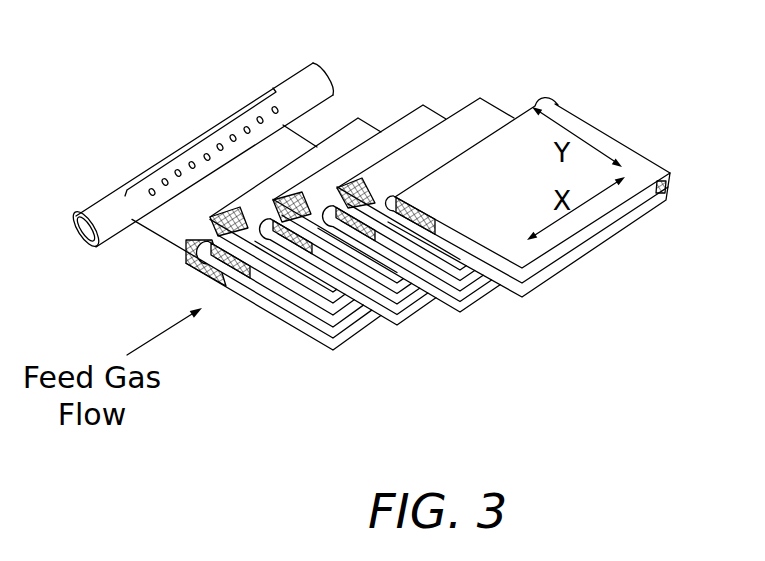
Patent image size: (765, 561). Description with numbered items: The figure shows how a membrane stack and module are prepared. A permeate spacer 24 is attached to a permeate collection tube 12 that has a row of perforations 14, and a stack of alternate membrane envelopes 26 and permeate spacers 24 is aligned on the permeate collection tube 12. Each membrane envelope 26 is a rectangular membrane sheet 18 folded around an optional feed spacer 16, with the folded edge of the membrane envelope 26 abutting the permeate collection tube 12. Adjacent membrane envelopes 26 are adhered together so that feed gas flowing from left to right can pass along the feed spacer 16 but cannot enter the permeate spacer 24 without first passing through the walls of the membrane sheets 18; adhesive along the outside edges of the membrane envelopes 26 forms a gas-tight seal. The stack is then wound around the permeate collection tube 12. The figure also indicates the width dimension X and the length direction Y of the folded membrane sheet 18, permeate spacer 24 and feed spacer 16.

The permeate collection tube 12 is at (318, 82).
The perforations 14 is at (246, 137).
The feed spacer 16 is at (600, 229).
The membrane sheet 18 is at (549, 208).
The permeate spacer 24 is at (177, 228).
The membrane envelope 26 is at (568, 208).